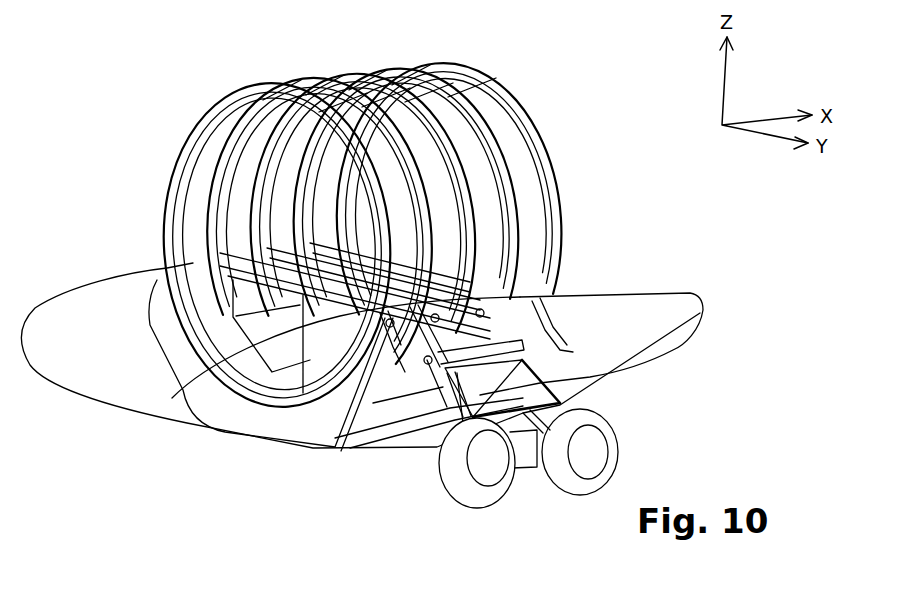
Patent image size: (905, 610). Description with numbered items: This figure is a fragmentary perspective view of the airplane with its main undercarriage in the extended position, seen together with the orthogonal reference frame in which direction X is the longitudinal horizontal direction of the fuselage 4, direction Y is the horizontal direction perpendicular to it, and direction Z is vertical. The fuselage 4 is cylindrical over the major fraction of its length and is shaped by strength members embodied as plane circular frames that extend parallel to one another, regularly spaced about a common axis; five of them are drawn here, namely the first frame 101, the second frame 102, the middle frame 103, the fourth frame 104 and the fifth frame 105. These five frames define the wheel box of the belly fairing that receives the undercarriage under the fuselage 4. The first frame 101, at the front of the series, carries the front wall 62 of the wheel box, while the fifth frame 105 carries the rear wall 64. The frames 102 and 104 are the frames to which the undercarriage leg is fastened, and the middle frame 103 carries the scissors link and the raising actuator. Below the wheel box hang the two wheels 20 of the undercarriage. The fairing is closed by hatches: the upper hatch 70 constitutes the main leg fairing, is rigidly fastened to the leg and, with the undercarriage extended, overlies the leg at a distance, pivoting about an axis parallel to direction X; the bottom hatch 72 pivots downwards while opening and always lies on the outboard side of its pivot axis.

The fuselage 4 is at (362, 210).
The first frame 101 is at (172, 197).
The second frame 102 is at (217, 167).
The middle frame 103 is at (267, 138).
The fourth frame 104 is at (495, 145).
The fifth frame 105 is at (560, 197).
The rear wall 64 is at (567, 320).
The front wall 62 is at (300, 418).
The bottom hatch 72 is at (420, 425).
The upper hatch 70 is at (520, 373).
The wheels 20 is at (588, 450).